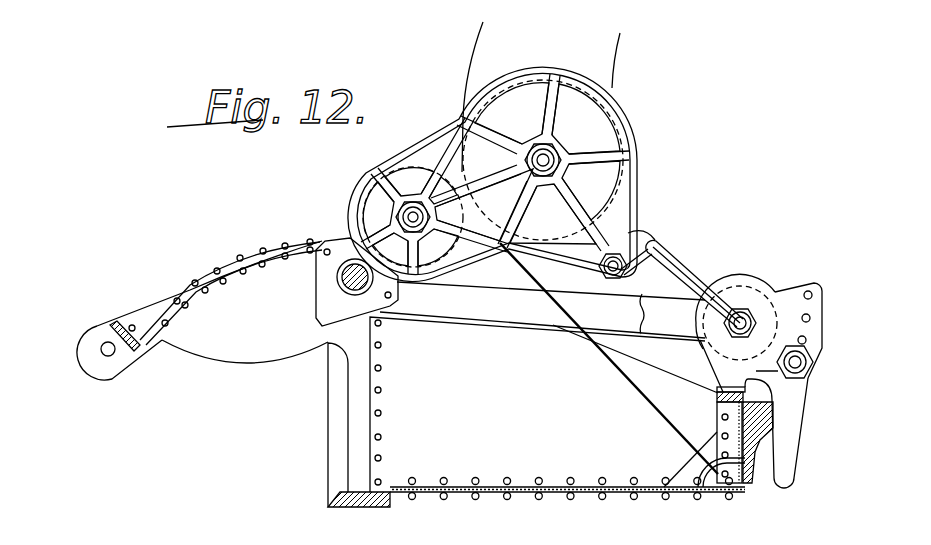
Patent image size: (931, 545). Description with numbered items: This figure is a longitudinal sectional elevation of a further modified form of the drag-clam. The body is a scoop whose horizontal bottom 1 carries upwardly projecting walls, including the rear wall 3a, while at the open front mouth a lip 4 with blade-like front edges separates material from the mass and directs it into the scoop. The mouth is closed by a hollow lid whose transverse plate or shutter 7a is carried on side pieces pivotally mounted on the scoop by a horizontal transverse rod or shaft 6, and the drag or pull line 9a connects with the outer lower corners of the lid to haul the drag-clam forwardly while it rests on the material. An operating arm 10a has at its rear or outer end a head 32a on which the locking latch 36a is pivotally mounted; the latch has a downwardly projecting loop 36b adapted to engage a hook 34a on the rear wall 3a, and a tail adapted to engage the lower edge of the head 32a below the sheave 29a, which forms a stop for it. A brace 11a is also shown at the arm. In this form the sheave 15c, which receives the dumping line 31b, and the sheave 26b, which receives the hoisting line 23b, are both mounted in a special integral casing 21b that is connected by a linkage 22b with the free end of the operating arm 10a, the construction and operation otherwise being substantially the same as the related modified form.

The horizontal bottom 1 is at (500, 492).
The rear wall 3a is at (740, 490).
The lip 4 is at (330, 505).
The horizontal transverse rod or shaft 6 is at (348, 285).
The transverse plate or shutter 7a is at (197, 300).
The drag or pull line 9a is at (20, 326).
The operating arm 10a is at (542, 310).
The brace 11a is at (737, 367).
The sheave 15c is at (358, 205).
The integral casing 21b is at (561, 70).
The linkage 22b is at (658, 246).
The hoisting line 23b is at (614, 75).
The sheave 26b is at (603, 197).
The sheave 29a is at (734, 287).
The dumping line 31b is at (717, 467).
The head 32a is at (793, 293).
The hook 34a is at (768, 432).
The locking latch 36a is at (814, 353).
The downwardly projecting loop 36b is at (796, 476).